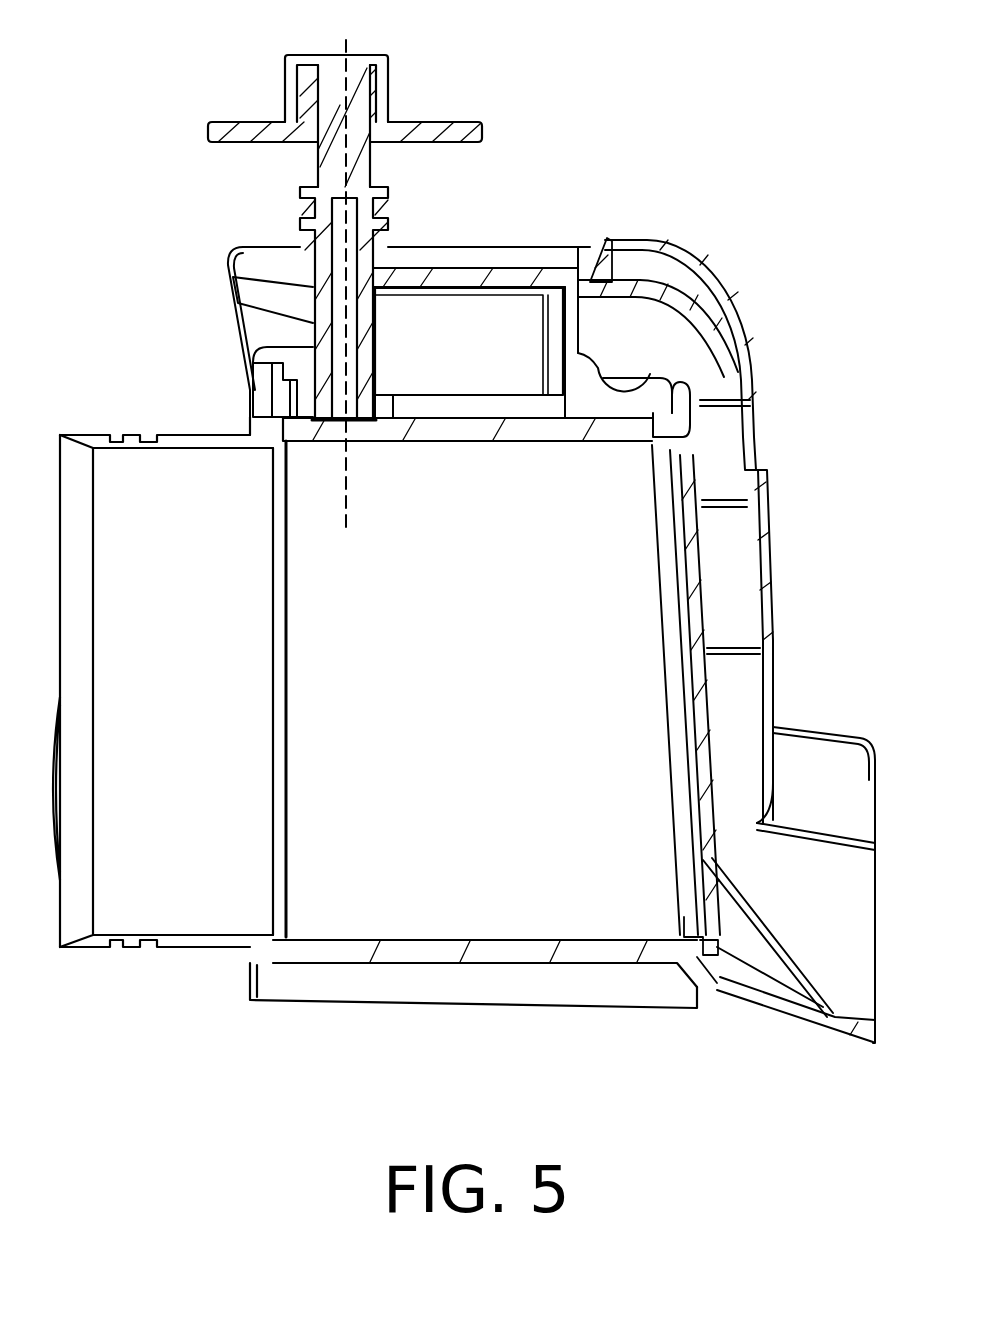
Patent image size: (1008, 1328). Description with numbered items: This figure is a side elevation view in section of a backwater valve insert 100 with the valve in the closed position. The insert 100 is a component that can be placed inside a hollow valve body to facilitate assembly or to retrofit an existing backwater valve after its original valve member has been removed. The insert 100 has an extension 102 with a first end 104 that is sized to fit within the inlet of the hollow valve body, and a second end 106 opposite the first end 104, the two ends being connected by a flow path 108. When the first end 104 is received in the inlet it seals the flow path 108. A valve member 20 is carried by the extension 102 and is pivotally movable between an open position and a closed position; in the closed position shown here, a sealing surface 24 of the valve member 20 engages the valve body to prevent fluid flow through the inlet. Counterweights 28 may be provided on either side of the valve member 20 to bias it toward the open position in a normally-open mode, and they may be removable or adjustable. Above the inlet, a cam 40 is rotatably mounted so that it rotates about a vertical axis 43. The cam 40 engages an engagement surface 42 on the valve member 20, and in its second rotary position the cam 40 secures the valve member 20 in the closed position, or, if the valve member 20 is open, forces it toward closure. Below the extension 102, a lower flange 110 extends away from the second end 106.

The backwater valve insert 100 is at (177, 275).
The counterweight 28 is at (567, 245).
The engagement surface 42 is at (587, 245).
The cam 40 is at (502, 277).
The vertical axis 43 is at (346, 487).
The valve member 20 is at (703, 712).
The first end 104 is at (70, 870).
The flow path 108 is at (378, 735).
The extension 102 is at (480, 953).
The second end 106 is at (650, 725).
The sealing surface 24 is at (698, 1000).
The lower flange 110 is at (837, 1033).